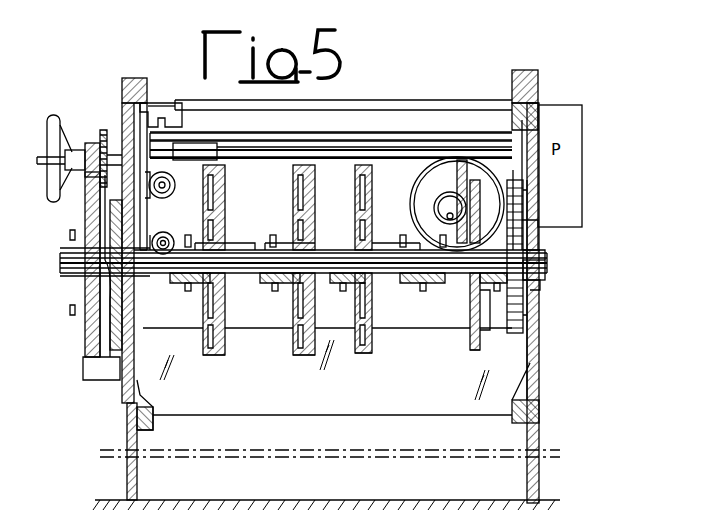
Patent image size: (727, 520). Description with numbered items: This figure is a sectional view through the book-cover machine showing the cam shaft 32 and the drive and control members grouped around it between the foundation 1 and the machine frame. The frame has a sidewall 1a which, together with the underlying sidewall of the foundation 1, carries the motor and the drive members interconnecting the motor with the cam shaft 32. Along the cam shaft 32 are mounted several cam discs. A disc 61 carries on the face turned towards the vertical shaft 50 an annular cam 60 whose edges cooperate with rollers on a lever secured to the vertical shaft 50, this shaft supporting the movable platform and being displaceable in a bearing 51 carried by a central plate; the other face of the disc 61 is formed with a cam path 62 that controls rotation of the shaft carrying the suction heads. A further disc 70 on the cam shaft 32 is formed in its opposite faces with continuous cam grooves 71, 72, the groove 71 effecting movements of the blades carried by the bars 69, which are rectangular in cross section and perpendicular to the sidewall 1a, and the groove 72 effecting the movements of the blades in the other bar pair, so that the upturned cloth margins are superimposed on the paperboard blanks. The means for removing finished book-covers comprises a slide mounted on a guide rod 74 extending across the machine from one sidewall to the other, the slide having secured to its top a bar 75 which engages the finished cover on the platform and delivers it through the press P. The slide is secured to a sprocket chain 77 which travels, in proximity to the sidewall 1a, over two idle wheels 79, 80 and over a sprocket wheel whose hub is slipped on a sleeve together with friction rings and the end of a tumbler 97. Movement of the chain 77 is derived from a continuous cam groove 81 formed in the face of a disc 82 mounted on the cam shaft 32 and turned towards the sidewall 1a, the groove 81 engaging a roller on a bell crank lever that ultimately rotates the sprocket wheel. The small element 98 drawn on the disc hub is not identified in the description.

The foundation 1 is at (536, 470).
The sidewall 1a is at (125, 125).
The cam shaft 32 is at (246, 265).
The vertical shaft 50 is at (373, 298).
The bearing 51 is at (358, 352).
The annular cam 60 is at (306, 352).
The disc 61 is at (315, 200).
The cam path 62 is at (299, 343).
The bars 69 is at (446, 99).
The disc 70 is at (225, 172).
The cam groove 71 is at (222, 354).
The cam groove 72 is at (206, 345).
The guide rod 74 is at (348, 150).
The bar 75 is at (173, 124).
The sprocket chain 77 is at (393, 160).
The idle wheel 79 is at (170, 182).
The idle wheel 80 is at (186, 240).
The cam groove 81 is at (462, 348).
The disc 82 is at (480, 350).
The tumbler 97 is at (445, 205).
The disc 98 is at (448, 222).